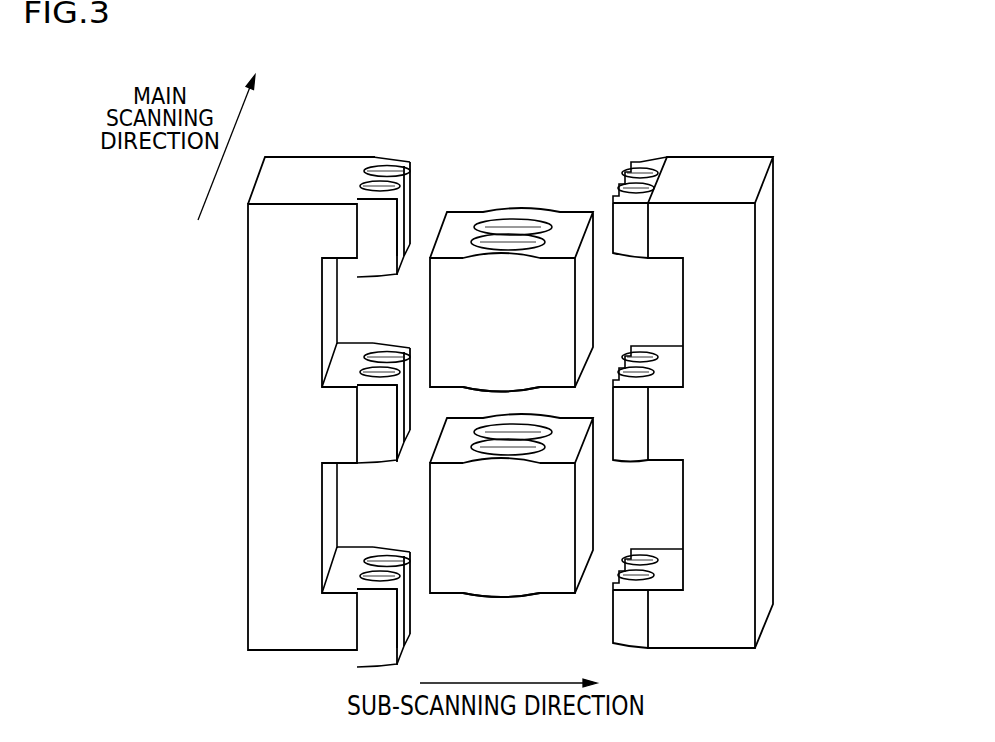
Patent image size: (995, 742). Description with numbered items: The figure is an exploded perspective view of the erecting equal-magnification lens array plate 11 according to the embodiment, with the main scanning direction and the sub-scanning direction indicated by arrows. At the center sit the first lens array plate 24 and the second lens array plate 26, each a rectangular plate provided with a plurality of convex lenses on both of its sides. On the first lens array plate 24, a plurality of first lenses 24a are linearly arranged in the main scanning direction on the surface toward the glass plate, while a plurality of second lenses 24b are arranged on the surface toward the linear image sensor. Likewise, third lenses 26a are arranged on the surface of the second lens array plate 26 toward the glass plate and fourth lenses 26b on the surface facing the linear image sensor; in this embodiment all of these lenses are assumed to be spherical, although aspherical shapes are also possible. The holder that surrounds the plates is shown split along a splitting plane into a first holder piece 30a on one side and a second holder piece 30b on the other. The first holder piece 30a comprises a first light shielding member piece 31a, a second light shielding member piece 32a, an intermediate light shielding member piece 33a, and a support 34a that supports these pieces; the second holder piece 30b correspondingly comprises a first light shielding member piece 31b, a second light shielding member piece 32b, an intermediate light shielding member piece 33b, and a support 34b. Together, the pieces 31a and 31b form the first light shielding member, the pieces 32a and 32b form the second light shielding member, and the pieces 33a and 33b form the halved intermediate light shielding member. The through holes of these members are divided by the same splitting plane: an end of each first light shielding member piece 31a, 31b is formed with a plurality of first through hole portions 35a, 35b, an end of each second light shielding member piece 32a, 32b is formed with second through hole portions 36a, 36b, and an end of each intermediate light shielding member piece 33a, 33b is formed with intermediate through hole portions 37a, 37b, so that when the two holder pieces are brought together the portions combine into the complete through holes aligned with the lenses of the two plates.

The light source unit 11 is at (684, 124).
The first lens array plate 24 is at (553, 280).
The first lens 24a is at (515, 222).
The second lens 24b is at (500, 394).
The second lens array plate 26 is at (557, 553).
The third lens 26a is at (507, 445).
The fourth lens 26b is at (502, 598).
The first holder piece 30a is at (230, 358).
The second holder piece 30b is at (792, 440).
The first light shielding member piece 31a is at (345, 172).
The first light shielding member piece 31b is at (678, 178).
The second light shielding member piece 32a is at (340, 620).
The second light shielding member piece 32b is at (667, 622).
The intermediate light shielding member piece 33a is at (340, 422).
The intermediate light shielding member piece 33b is at (667, 413).
The support 34a is at (280, 298).
The support 34b is at (733, 531).
The first through hole portion 35a is at (395, 172).
The first through hole portion 35b is at (642, 170).
The second through hole portion 36a is at (383, 578).
The second through hole portion 36b is at (630, 577).
The intermediate through hole portion 37a is at (392, 357).
The intermediate through hole portion 37b is at (633, 357).